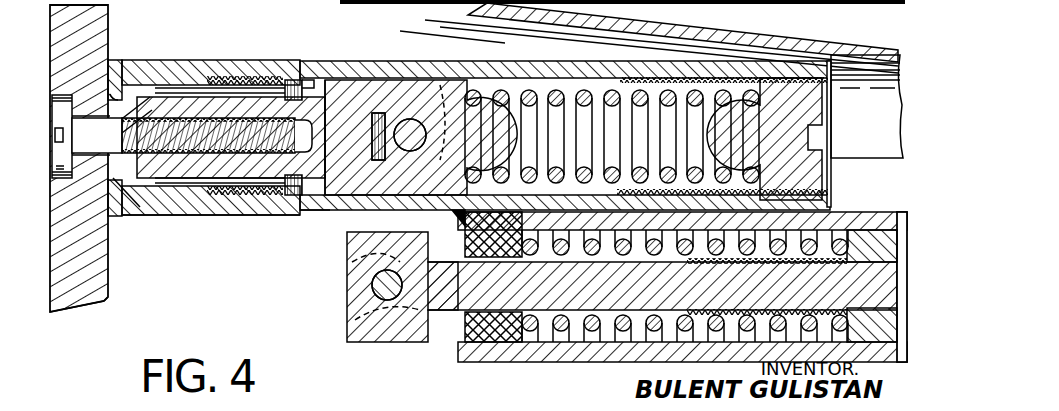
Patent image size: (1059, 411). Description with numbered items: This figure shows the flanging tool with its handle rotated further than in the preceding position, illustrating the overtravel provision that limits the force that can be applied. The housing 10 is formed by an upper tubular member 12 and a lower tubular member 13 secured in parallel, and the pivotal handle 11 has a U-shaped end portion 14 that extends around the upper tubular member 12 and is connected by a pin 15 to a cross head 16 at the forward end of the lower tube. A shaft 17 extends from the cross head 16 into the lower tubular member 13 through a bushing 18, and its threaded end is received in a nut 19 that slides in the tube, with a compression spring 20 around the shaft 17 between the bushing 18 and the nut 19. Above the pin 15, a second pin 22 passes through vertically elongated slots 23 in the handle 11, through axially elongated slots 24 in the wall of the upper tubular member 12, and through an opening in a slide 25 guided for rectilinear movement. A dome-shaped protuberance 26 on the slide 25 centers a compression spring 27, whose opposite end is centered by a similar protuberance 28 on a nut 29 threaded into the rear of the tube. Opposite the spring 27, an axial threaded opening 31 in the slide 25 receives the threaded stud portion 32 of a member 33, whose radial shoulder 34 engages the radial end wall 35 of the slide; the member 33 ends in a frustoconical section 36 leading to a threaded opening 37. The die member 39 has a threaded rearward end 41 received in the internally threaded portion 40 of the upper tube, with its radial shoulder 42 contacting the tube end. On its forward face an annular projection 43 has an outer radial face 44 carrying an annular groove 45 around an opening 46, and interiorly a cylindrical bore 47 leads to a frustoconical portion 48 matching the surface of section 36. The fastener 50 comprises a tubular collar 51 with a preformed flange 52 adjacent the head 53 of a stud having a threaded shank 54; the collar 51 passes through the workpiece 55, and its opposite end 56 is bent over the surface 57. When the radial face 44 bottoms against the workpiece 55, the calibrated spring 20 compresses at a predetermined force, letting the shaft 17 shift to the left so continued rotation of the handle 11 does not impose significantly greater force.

The housing 10 is at (848, 189).
The handle 11 is at (893, 55).
The upper tubular member 12 is at (291, 60).
The lower tubular member 13 is at (845, 3).
The U-shaped end portion 14 is at (366, 33).
The pin 15 is at (370, 288).
The cross head 16 is at (358, 342).
The shaft 17 is at (445, 3).
The bushing 18 is at (466, 241).
The nut 19 is at (885, 214).
The compression spring 20 is at (768, 4).
The second pin 22 is at (412, 115).
The slots 23 is at (392, 200).
The slots 24 is at (440, 95).
The slide 25 is at (313, 212).
The dome-shaped protuberance 26 is at (490, 100).
The compression spring 27 is at (582, 96).
The protuberance 28 is at (737, 106).
The nut 29 is at (833, 104).
The axial threaded opening 31 is at (373, 110).
The threaded stud portion 32 is at (340, 96).
The member 33 is at (258, 202).
The radial shoulder 34 is at (282, 208).
The radial end wall 35 is at (312, 84).
The frustoconical section 36 is at (147, 215).
The threaded opening 37 is at (227, 196).
The die member 39 is at (200, 55).
The internally threaded portion 40 is at (236, 64).
The threaded rearward end 41 is at (245, 78).
The radial shoulder 42 is at (212, 216).
The annular projection 43 is at (122, 88).
The outer radial face 44 is at (112, 208).
The annular groove 45 is at (116, 106).
The opening 46 is at (126, 210).
The cylindrical bore 47 is at (188, 205).
The frustoconical portion 48 is at (148, 88).
The fastener 50 is at (40, 102).
The tubular collar 51 is at (50, 208).
The preformed flange 52 is at (110, 100).
The head 53 is at (60, 163).
The threaded shank 54 is at (192, 135).
The workpiece 55 is at (76, 304).
The opposite end 56 is at (110, 98).
The surface 57 is at (112, 299).